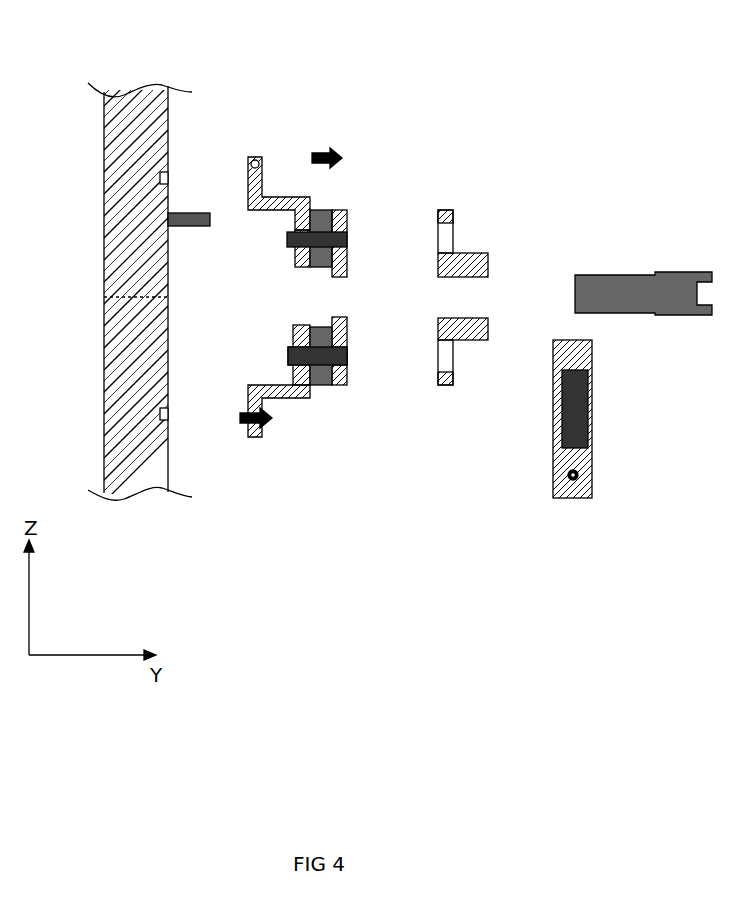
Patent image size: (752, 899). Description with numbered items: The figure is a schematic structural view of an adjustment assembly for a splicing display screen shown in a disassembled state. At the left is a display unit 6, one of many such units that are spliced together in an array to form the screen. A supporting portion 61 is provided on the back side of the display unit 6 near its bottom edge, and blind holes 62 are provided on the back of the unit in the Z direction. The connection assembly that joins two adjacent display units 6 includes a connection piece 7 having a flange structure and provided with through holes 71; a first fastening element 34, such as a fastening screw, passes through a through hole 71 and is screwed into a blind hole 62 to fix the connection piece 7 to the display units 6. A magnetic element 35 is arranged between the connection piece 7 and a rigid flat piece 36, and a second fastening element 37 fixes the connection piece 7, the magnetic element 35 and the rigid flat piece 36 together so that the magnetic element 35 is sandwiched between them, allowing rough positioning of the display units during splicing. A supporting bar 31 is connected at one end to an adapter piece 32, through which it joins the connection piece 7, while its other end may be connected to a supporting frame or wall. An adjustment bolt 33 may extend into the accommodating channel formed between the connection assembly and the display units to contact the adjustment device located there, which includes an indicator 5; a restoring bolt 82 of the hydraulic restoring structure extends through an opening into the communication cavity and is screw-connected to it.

The display unit 6 is at (135, 195).
The blind hole 62 is at (163, 172).
The supporting portion 61 is at (196, 213).
The connection piece 7 is at (310, 198).
The through hole 71 is at (250, 160).
The second fastening element 37 is at (347, 237).
The first fastening element 34 is at (312, 148).
The rigid flat piece 36 is at (347, 385).
The magnetic element 35 is at (322, 385).
The adapter piece 32 is at (452, 210).
The supporting bar 31 is at (465, 341).
The adjustment bolt 33 is at (653, 298).
The indicator 5 is at (588, 414).
The restoring bolt 82 is at (578, 477).